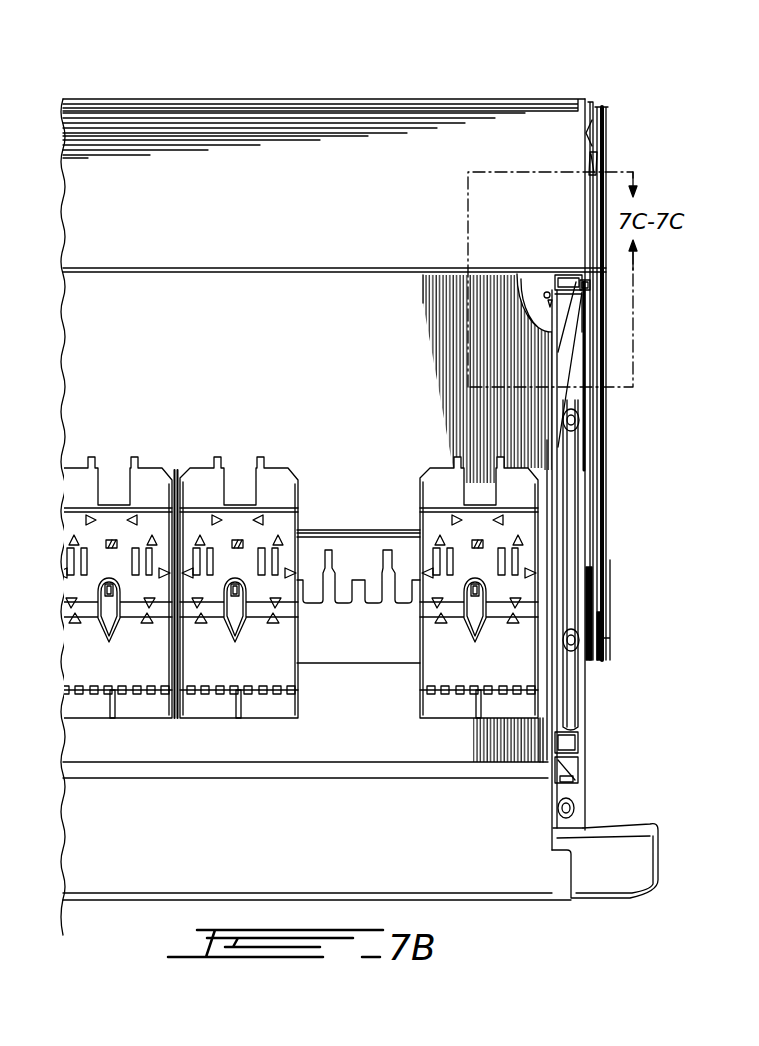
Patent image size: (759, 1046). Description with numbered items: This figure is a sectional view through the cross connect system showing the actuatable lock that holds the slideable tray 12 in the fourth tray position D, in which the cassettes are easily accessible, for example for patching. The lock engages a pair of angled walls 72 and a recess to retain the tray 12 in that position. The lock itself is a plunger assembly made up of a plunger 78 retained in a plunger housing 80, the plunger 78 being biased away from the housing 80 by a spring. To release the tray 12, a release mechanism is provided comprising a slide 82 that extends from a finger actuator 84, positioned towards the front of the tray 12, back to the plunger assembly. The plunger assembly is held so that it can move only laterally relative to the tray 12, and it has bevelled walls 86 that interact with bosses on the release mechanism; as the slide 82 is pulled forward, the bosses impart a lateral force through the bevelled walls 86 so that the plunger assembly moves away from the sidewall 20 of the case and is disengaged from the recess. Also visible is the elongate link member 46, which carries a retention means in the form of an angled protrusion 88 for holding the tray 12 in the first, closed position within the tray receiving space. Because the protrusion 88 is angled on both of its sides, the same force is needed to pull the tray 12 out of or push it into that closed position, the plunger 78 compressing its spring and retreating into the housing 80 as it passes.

The slideable tray 12 is at (217, 325).
The fourth tray position D is at (345, 275).
The sidewall 20 is at (607, 423).
The elongate link member 46 is at (590, 455).
The angled walls 72 is at (592, 271).
The plunger 78 is at (585, 278).
The plunger housing 80 is at (563, 277).
The slide 82 is at (552, 435).
The finger actuator 84 is at (580, 772).
The bevelled walls 86 is at (567, 347).
The angled protrusion 88 is at (590, 126).